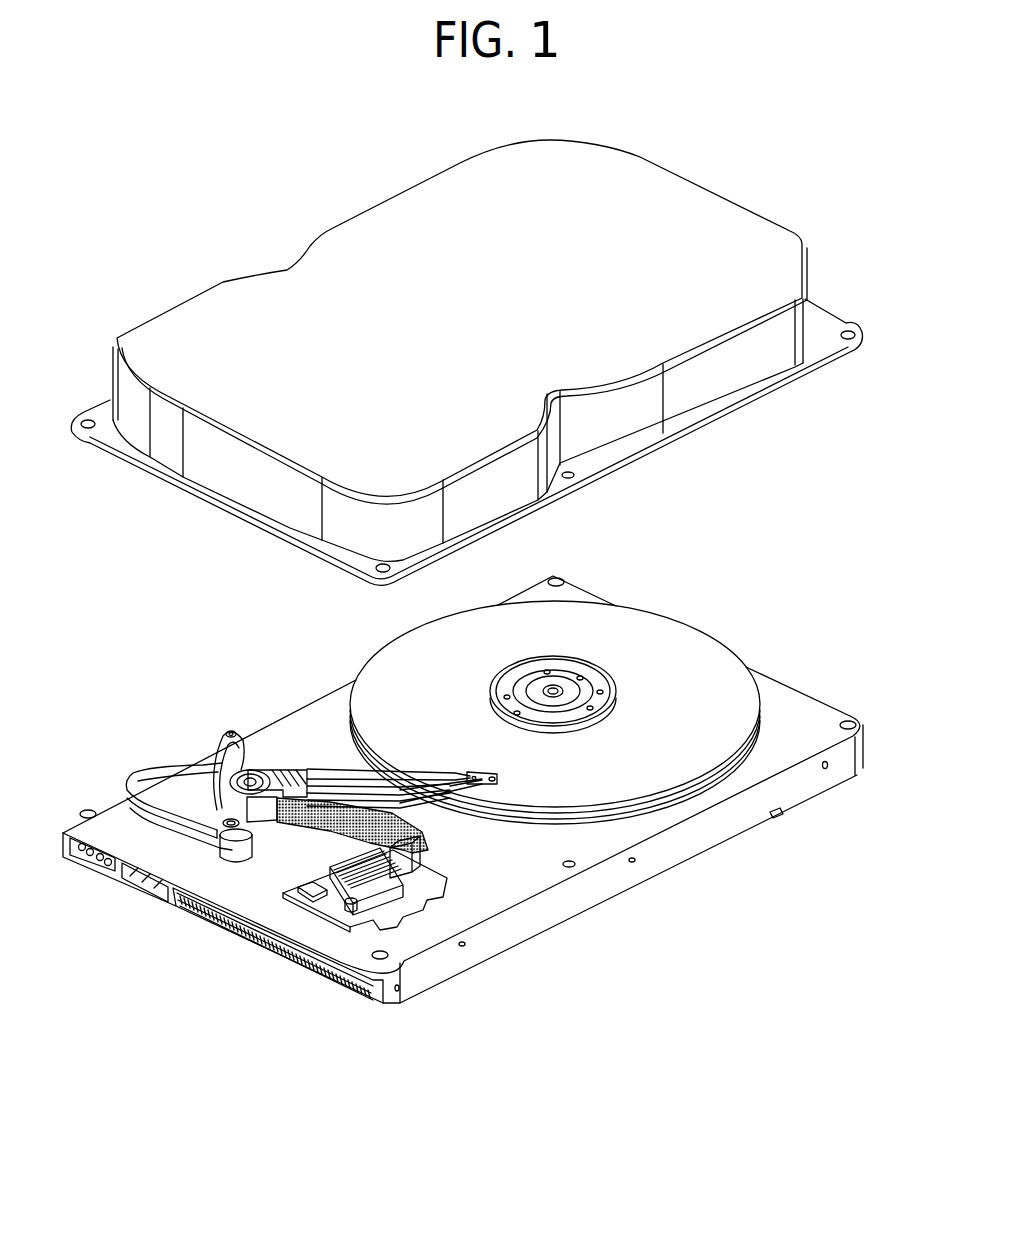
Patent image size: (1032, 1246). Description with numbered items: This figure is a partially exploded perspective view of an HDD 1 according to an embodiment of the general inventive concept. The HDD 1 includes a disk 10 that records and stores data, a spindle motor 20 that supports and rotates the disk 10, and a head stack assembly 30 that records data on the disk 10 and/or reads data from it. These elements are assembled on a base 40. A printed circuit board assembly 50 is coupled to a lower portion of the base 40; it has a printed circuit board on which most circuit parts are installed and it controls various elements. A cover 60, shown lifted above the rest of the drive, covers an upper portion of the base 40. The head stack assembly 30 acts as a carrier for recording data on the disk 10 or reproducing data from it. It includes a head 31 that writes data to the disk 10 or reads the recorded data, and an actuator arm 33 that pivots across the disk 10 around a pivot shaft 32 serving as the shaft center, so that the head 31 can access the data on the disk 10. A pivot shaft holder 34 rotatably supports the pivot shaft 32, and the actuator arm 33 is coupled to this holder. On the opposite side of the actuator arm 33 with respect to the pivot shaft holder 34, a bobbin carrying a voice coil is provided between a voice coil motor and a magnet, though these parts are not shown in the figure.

The HDD 1 is at (118, 597).
The disk 10 is at (735, 692).
The spindle motor 20 is at (607, 677).
The head stack assembly 30 is at (328, 750).
The head 31 is at (498, 782).
The pivot shaft 32 is at (238, 768).
The actuator arm 33 is at (288, 772).
The pivot shaft holder 34 is at (185, 772).
The base 40 is at (807, 726).
The printed circuit board assembly 50 is at (372, 998).
The cover 60 is at (728, 215).